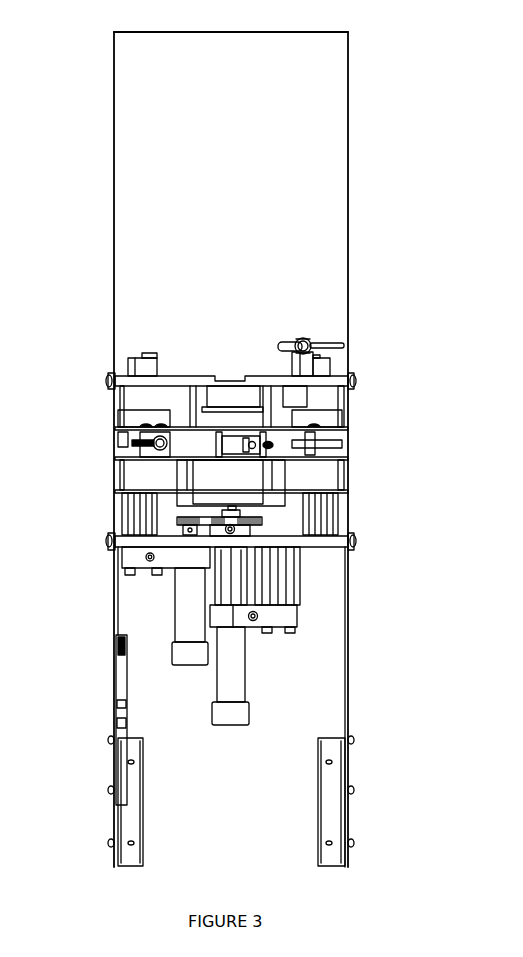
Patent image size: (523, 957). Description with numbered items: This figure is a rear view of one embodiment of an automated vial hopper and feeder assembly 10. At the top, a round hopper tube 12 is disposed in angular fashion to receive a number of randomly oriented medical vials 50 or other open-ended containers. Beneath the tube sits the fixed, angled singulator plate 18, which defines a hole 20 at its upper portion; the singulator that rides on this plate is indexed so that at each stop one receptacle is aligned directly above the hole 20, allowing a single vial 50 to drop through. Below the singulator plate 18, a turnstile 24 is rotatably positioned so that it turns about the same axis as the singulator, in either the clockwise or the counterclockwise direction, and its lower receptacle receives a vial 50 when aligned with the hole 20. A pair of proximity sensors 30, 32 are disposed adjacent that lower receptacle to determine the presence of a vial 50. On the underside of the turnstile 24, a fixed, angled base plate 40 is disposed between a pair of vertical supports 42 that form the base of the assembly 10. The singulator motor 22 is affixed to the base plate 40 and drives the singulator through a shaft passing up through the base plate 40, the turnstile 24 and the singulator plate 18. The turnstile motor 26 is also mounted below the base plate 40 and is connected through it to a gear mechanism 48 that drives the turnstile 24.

The vial hopper and feeder assembly 10 is at (83, 62).
The hopper tube 12 is at (113, 120).
The singulator plate 18 is at (340, 382).
The hole 20 is at (229, 374).
The singulator motor 22 is at (233, 680).
The turnstile 24 is at (183, 472).
The turnstile motor 26 is at (195, 622).
The proximity sensor 30 is at (231, 447).
The proximity sensor 32 is at (238, 512).
The base plate 40 is at (330, 538).
The vertical supports 42 is at (113, 585).
The gear mechanism 48 is at (258, 519).
The medical vial 50 is at (236, 415).